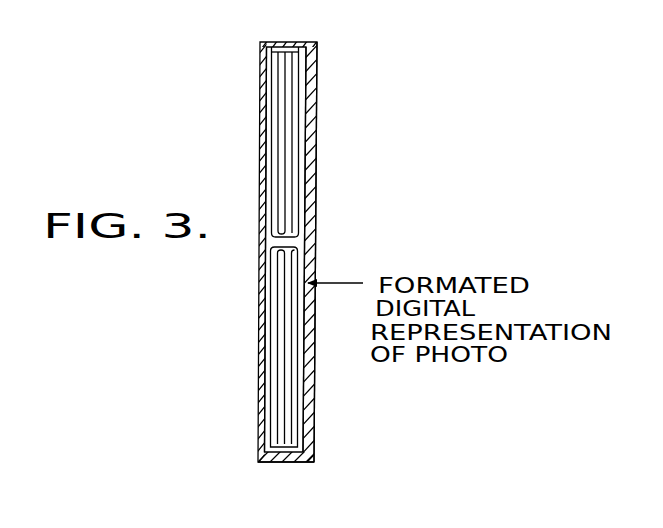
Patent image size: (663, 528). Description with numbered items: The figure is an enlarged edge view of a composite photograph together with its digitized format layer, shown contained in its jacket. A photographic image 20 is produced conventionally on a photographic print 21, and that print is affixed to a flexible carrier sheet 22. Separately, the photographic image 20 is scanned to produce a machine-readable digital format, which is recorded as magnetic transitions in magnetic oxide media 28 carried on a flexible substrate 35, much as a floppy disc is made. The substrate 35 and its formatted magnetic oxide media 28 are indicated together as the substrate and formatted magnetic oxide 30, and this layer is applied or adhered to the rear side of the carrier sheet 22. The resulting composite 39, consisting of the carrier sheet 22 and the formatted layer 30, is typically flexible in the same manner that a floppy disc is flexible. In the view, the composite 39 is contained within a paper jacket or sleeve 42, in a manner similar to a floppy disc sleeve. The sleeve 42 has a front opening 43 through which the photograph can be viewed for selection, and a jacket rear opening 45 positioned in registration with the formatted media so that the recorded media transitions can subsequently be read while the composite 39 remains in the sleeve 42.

The photographic image 20 is at (261, 331).
The photographic print 21 is at (263, 303).
The carrier sheet 22 is at (279, 82).
The magnetic oxide media 28 is at (295, 187).
The substrate and formatted magnetic oxide 30 is at (309, 59).
The flexible substrate 35 is at (288, 213).
The composite 39 is at (261, 253).
The paper jacket or sleeve 42 is at (313, 423).
The front opening 43 is at (263, 160).
The jacket rear opening 45 is at (317, 161).